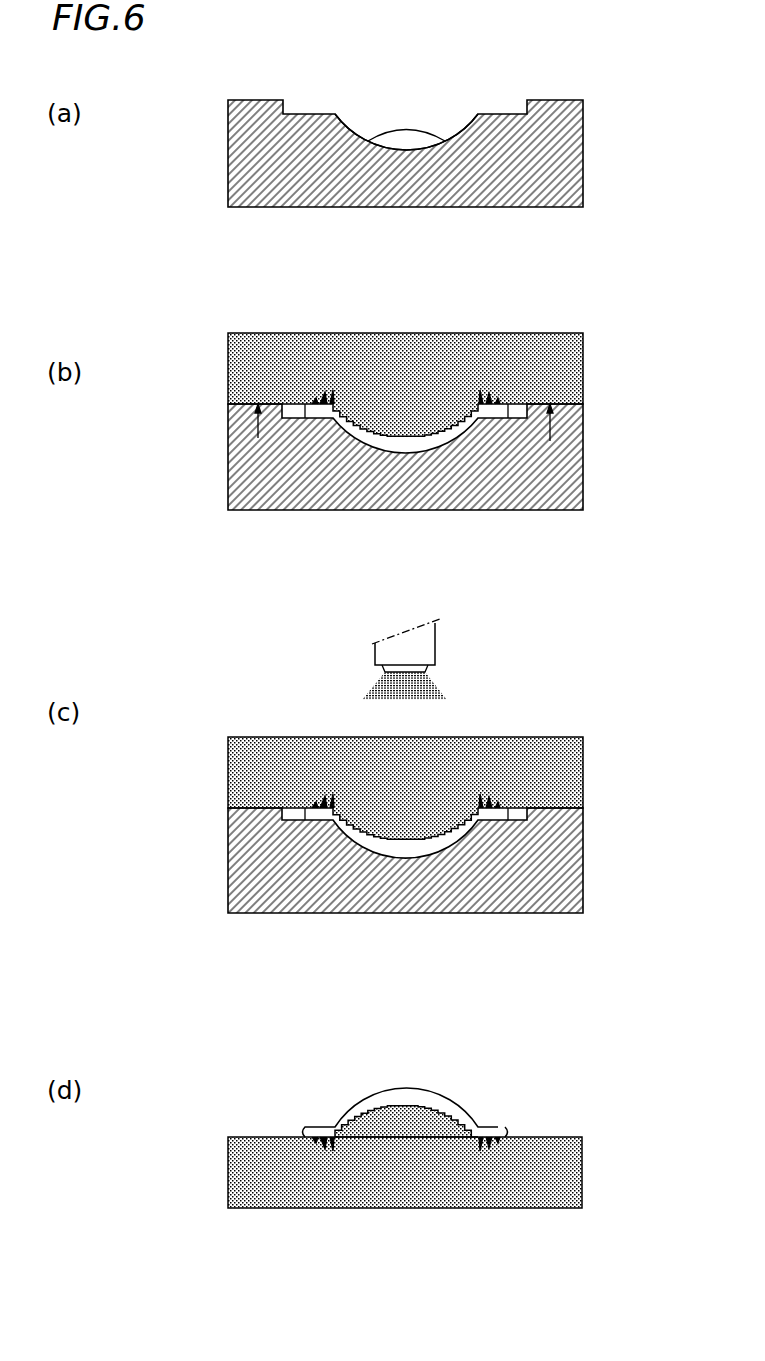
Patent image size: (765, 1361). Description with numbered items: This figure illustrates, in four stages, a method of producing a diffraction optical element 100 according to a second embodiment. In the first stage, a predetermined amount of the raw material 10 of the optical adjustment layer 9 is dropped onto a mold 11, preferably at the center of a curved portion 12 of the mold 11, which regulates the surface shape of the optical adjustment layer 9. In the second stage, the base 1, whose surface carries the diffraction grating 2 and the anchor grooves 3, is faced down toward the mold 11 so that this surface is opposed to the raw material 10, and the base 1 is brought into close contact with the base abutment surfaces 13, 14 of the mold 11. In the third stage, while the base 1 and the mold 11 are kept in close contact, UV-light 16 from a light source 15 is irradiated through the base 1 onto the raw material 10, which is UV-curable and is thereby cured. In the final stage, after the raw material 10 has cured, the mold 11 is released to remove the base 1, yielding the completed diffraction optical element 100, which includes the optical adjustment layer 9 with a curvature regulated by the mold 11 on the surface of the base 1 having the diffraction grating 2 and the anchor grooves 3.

The base 1 is at (410, 357).
The diffraction grating 2 is at (400, 430).
The anchor grooves 3 is at (302, 380).
The optical adjustment layer 9 is at (407, 1098).
The raw material 10 is at (407, 138).
The mold 11 is at (228, 163).
The curved portion 12 is at (343, 117).
The base abutment surface 13 is at (258, 438).
The base abutment surface 14 is at (550, 441).
The light source 15 is at (410, 653).
The UV-light 16 is at (425, 690).
The diffraction optical element 100 is at (630, 1083).